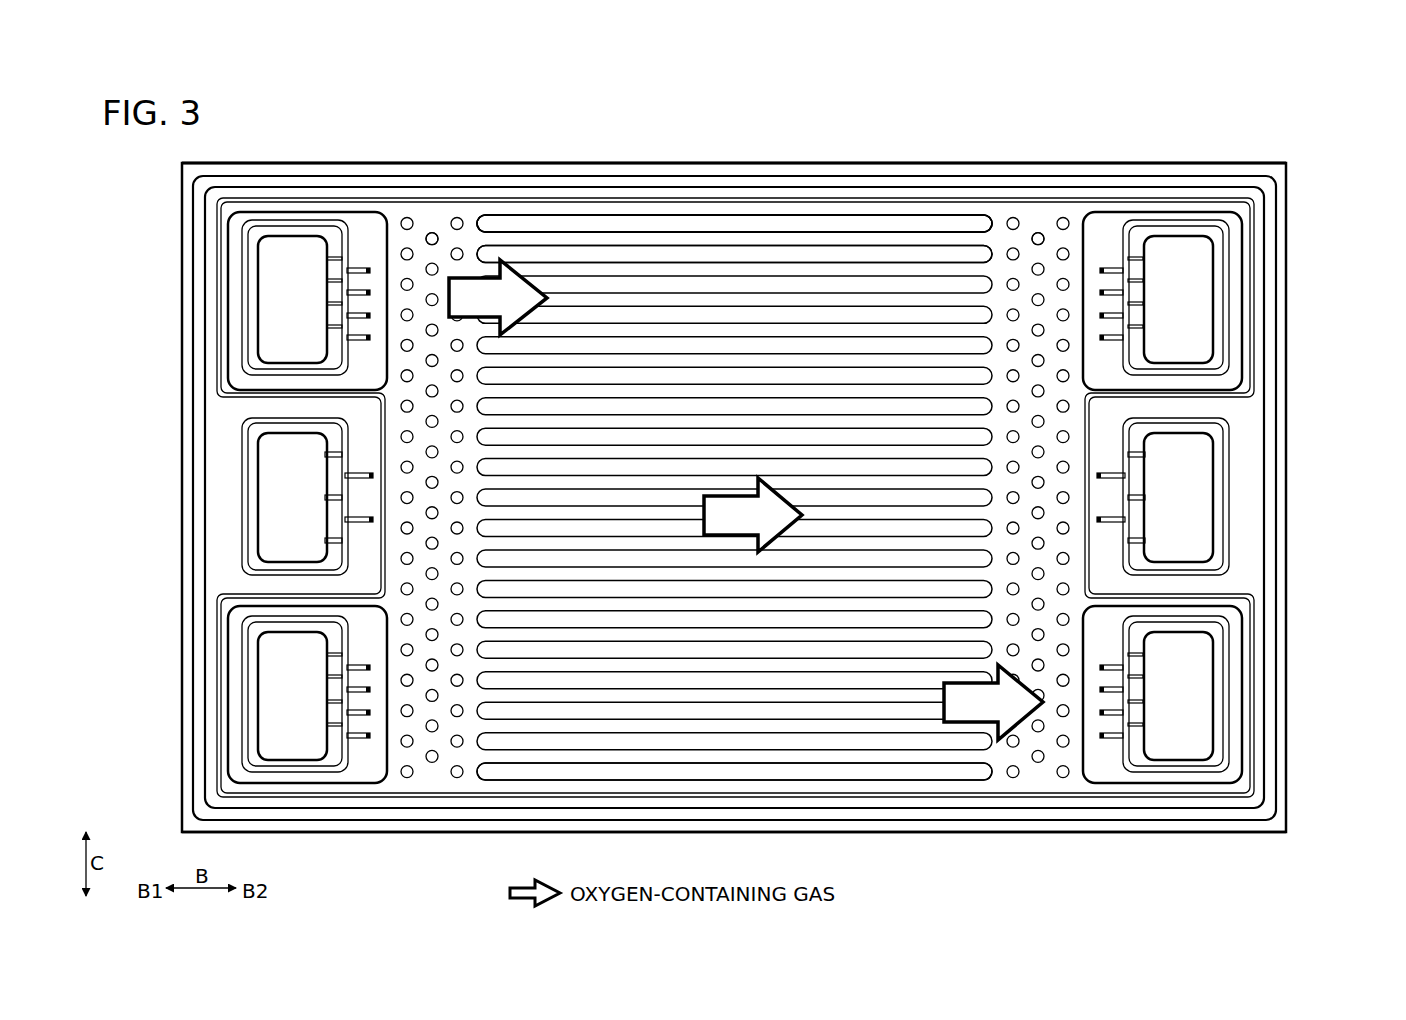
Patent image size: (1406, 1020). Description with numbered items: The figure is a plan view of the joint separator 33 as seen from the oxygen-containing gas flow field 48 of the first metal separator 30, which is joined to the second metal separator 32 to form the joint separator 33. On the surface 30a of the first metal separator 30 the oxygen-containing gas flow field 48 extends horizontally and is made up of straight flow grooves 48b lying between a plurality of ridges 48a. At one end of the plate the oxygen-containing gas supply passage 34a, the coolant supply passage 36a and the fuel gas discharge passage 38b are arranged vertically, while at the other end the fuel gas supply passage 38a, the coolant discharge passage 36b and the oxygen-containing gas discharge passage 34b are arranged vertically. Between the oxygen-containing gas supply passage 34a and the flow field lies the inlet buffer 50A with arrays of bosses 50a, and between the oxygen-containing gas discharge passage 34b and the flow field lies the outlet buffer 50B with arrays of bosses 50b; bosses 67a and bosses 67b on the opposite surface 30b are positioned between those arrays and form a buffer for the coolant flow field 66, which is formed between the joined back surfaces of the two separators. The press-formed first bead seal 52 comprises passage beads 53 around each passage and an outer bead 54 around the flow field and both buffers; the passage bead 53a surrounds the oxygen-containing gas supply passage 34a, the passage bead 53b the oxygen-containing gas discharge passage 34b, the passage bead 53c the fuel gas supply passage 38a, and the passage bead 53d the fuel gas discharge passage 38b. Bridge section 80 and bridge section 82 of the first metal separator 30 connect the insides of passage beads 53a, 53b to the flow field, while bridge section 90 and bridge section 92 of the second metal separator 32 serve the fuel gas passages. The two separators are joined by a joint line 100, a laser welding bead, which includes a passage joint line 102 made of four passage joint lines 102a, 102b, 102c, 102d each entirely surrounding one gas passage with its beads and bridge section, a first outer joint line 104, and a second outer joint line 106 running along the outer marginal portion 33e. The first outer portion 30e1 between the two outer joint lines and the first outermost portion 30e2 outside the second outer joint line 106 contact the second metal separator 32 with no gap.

The joint separator 33 is at (142, 174).
The first metal separator 30 is at (262, 160).
The second metal separator 32 is at (326, 160).
The outer marginal portion 33e is at (440, 833).
The surface 30a is at (538, 212).
The surface 30b is at (581, 212).
The first outer portion 30e1 is at (888, 177).
The first outermost portion 30e2 is at (815, 186).
The oxygen-containing gas supply passage 34a is at (268, 257).
The oxygen-containing gas discharge passage 34b is at (1190, 710).
The coolant supply passage 36a is at (280, 530).
The coolant discharge passage 36b is at (1198, 527).
The fuel gas supply passage 38a is at (1200, 287).
The fuel gas discharge passage 38b is at (280, 668).
The oxygen-containing gas flow field 48 is at (734, 436).
The ridges 48a is at (680, 253).
The straight flow grooves 48b is at (746, 238).
The inlet buffer 50A is at (270, 498).
The bosses 50a is at (451, 497).
The outlet buffer 50B is at (1193, 498).
The bosses 50b is at (1019, 497).
The first bead seal 52 is at (758, 554).
The passage beads 53 is at (730, 496).
The passage bead 53a is at (243, 281).
The passage bead 53b is at (1207, 773).
The passage bead 53c is at (1229, 251).
The passage bead 53d is at (245, 722).
The outer bead 54 is at (1160, 798).
The coolant flow field 66 is at (530, 752).
The bosses 67a is at (432, 232).
The bosses 67b is at (1038, 232).
The bridge section 80 is at (370, 236).
The bridge section 82 is at (1110, 763).
The bridge section 90 is at (1103, 236).
The bridge section 92 is at (361, 742).
The joint line 100 is at (769, 456).
The passage joint line 102 is at (733, 469).
The passage joint line 102a is at (230, 352).
The passage joint line 102b is at (1241, 640).
The passage joint line 102c is at (1236, 212).
The passage joint line 102d is at (230, 756).
The first outer joint line 104 is at (734, 467).
The second outer joint line 106 is at (1133, 176).